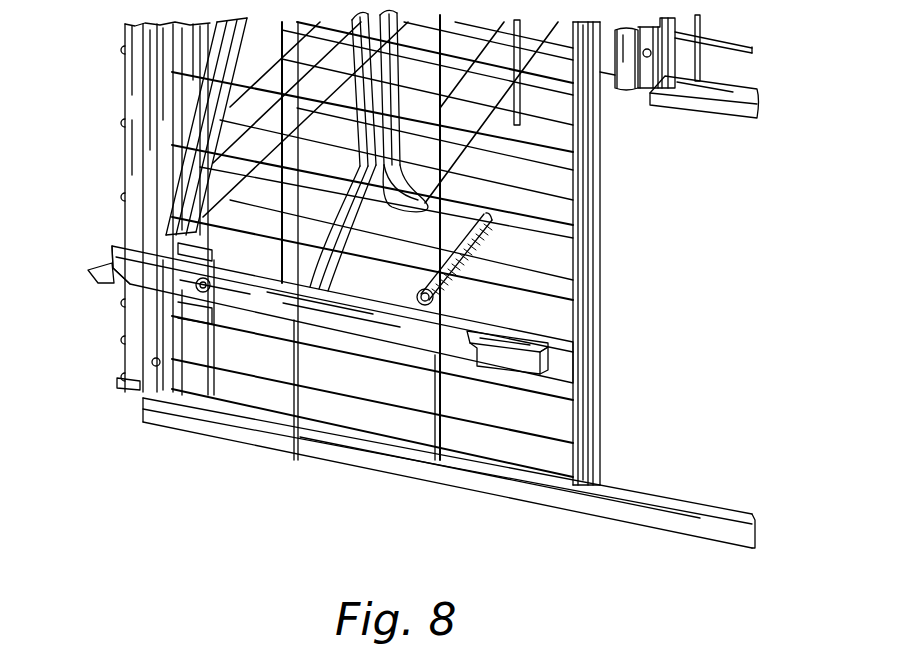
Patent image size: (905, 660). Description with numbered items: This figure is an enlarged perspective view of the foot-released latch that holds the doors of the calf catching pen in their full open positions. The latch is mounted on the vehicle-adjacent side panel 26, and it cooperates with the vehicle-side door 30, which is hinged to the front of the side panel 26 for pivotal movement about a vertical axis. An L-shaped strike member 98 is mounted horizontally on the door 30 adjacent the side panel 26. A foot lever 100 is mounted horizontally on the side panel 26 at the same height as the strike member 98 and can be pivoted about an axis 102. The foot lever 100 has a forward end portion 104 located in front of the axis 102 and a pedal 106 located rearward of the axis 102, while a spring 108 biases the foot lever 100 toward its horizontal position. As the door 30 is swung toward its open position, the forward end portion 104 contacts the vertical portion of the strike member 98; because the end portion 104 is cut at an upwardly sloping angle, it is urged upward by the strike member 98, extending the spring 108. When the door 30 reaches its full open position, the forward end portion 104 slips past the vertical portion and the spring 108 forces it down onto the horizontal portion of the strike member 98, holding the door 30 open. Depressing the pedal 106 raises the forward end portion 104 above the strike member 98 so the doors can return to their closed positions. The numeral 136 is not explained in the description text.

The vehicle-adjacent side panel 26 is at (535, 472).
The vehicle-side door 30 is at (353, 235).
The L-shaped strike member 98 is at (105, 262).
The foot lever 100 is at (283, 318).
The axis 102 is at (196, 287).
The forward end portion 104 is at (106, 282).
The pedal 106 is at (537, 360).
The spring 108 is at (470, 252).
The latch assembly 136 is at (74, 309).